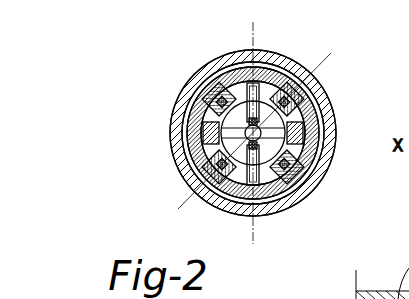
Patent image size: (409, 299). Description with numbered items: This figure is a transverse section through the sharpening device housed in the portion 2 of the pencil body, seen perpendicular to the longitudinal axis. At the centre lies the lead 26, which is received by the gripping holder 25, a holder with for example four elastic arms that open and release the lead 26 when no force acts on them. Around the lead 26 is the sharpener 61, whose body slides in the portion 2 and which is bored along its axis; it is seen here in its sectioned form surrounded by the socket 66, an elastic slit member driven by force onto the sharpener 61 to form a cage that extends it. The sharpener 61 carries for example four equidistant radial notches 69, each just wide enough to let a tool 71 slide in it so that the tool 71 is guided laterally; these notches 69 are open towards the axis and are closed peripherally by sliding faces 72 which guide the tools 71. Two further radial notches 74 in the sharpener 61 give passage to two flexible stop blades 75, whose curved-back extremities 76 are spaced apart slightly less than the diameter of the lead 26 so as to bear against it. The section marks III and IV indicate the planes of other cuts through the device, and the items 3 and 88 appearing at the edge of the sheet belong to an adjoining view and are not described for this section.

In FIG. 2, the portion of the body 2 is at (327, 165).
In FIG. 2, the gripping holder 25 is at (310, 94).
In FIG. 2, the lead 26 is at (218, 75).
In FIG. 2, the sharpener 61 is at (233, 62).
In FIG. 2, the socket 66 is at (334, 114).
In FIG. 2, the notches 69 is at (214, 205).
In FIG. 2, the tool 71 is at (316, 70).
In FIG. 2, the sliding faces 72 is at (290, 170).
In FIG. 2, the radial notches 74 is at (271, 62).
In FIG. 2, the stop blades 75 is at (282, 211).
In FIG. 2, the curved-back extremities 76 is at (305, 134).
In FIG. 2, the section line III- III is at (253, 132).
In FIG. 2, the section line IV- IV is at (257, 135).
In FIG. 3, the wall (FIG. 3 fragment) 3 is at (360, 295).
In FIG. 3, the element 88 (FIG. 3 fragment) 88 is at (321, 294).